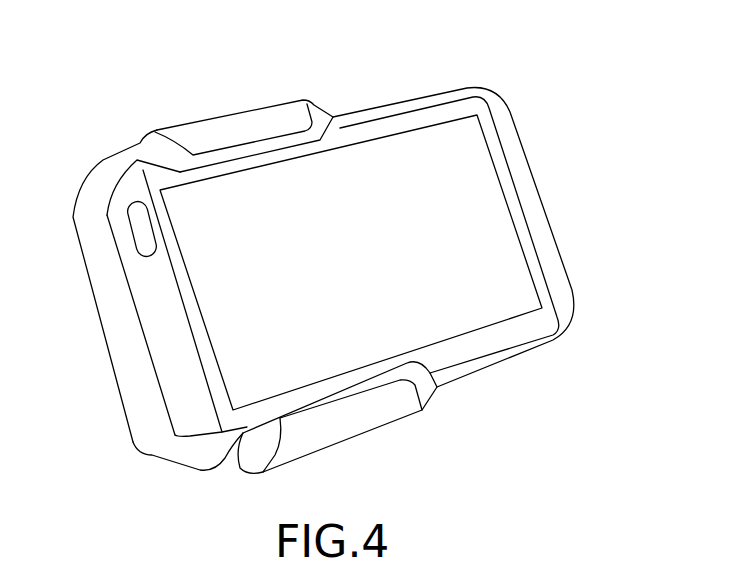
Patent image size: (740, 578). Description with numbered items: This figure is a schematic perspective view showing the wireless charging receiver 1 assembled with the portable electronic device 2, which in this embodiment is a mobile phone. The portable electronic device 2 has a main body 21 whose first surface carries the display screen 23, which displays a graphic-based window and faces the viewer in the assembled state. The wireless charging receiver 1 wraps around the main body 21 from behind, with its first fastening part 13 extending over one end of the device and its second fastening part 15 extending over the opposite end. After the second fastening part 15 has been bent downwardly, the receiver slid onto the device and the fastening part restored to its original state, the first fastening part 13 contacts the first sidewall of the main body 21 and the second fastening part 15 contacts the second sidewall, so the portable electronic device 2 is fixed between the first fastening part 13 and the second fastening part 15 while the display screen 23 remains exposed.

The wireless charging receiver 1 is at (188, 108).
The portable electronic device 2 is at (436, 75).
The first fastening part 13 is at (258, 118).
The second fastening part 15 is at (362, 417).
The main body 21 is at (195, 450).
The display screen 23 is at (499, 238).